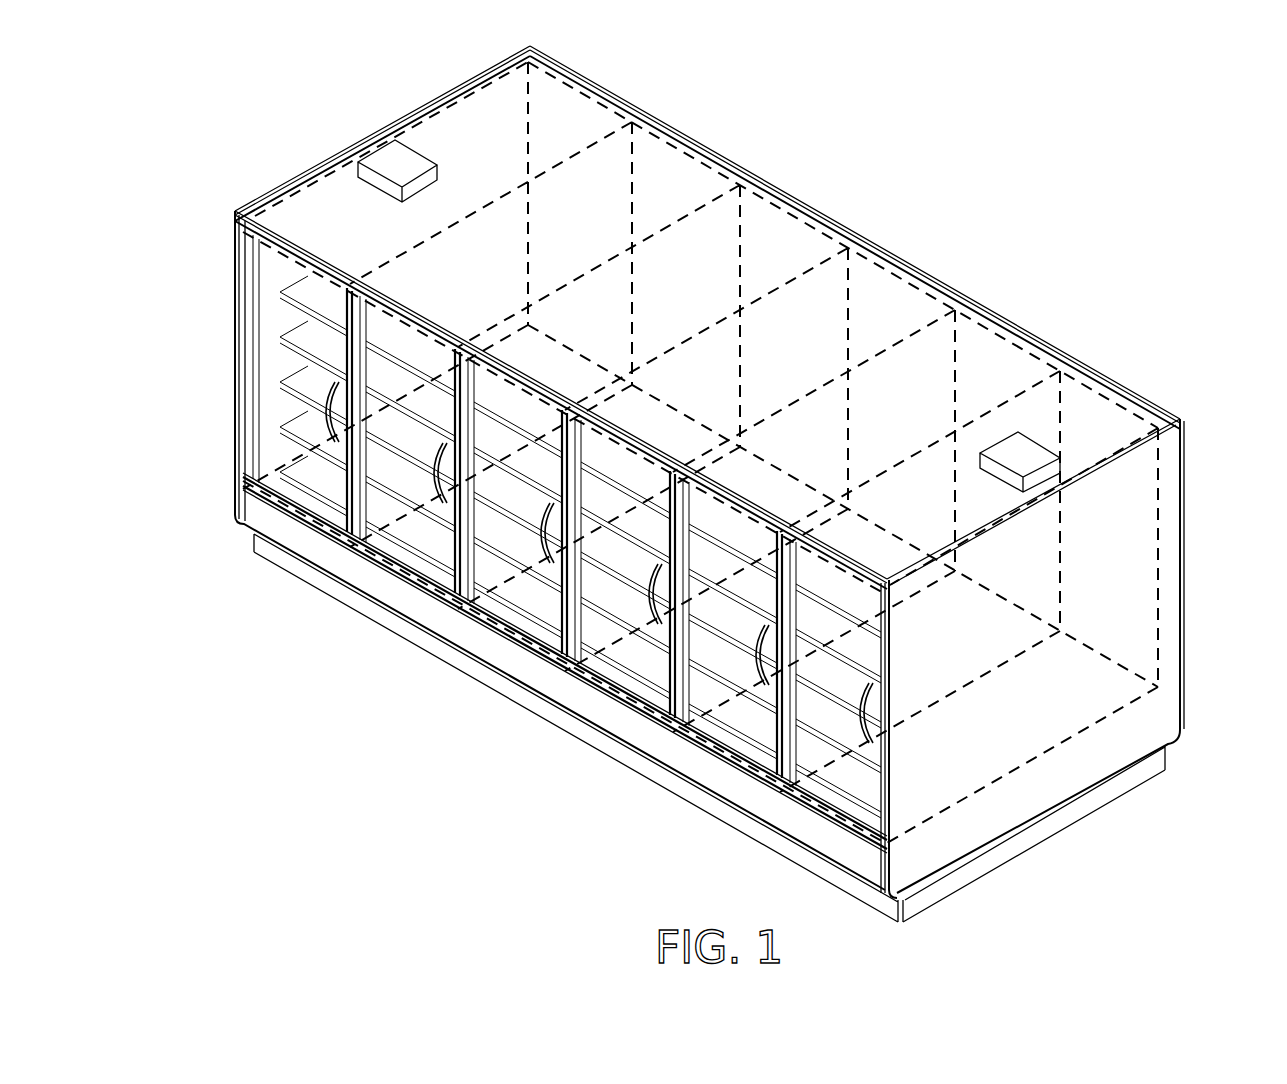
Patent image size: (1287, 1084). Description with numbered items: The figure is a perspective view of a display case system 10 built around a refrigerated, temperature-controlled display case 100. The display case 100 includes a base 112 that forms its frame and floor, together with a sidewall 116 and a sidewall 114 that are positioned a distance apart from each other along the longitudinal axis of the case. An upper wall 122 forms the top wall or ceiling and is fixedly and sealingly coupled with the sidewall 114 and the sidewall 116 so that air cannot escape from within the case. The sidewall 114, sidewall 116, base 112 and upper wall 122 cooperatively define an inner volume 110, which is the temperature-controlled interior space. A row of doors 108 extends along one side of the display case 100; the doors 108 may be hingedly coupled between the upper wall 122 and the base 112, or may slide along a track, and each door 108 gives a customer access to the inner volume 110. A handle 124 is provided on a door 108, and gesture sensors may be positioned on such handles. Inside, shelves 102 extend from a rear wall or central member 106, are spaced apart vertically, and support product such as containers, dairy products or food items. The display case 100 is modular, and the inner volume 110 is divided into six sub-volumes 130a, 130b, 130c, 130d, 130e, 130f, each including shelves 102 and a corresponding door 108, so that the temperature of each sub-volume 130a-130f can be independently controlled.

The display case system 10 is at (1166, 157).
The display case 100 is at (172, 150).
The shelves 102 is at (283, 415).
The central member 106 is at (264, 244).
The doors 108 is at (268, 445).
The inner volume 110 is at (1178, 592).
The base 112 is at (608, 755).
The sidewall 114 is at (1062, 773).
The sidewall 116 is at (405, 116).
The upper wall 122 is at (712, 183).
The handle 124 is at (556, 541).
The sub-volume 130a is at (563, 110).
The sub-volume 130b is at (668, 163).
The sub-volume 130c is at (774, 228).
The sub-volume 130d is at (884, 296).
The sub-volume 130e is at (987, 352).
The sub-volume 130f is at (1090, 406).